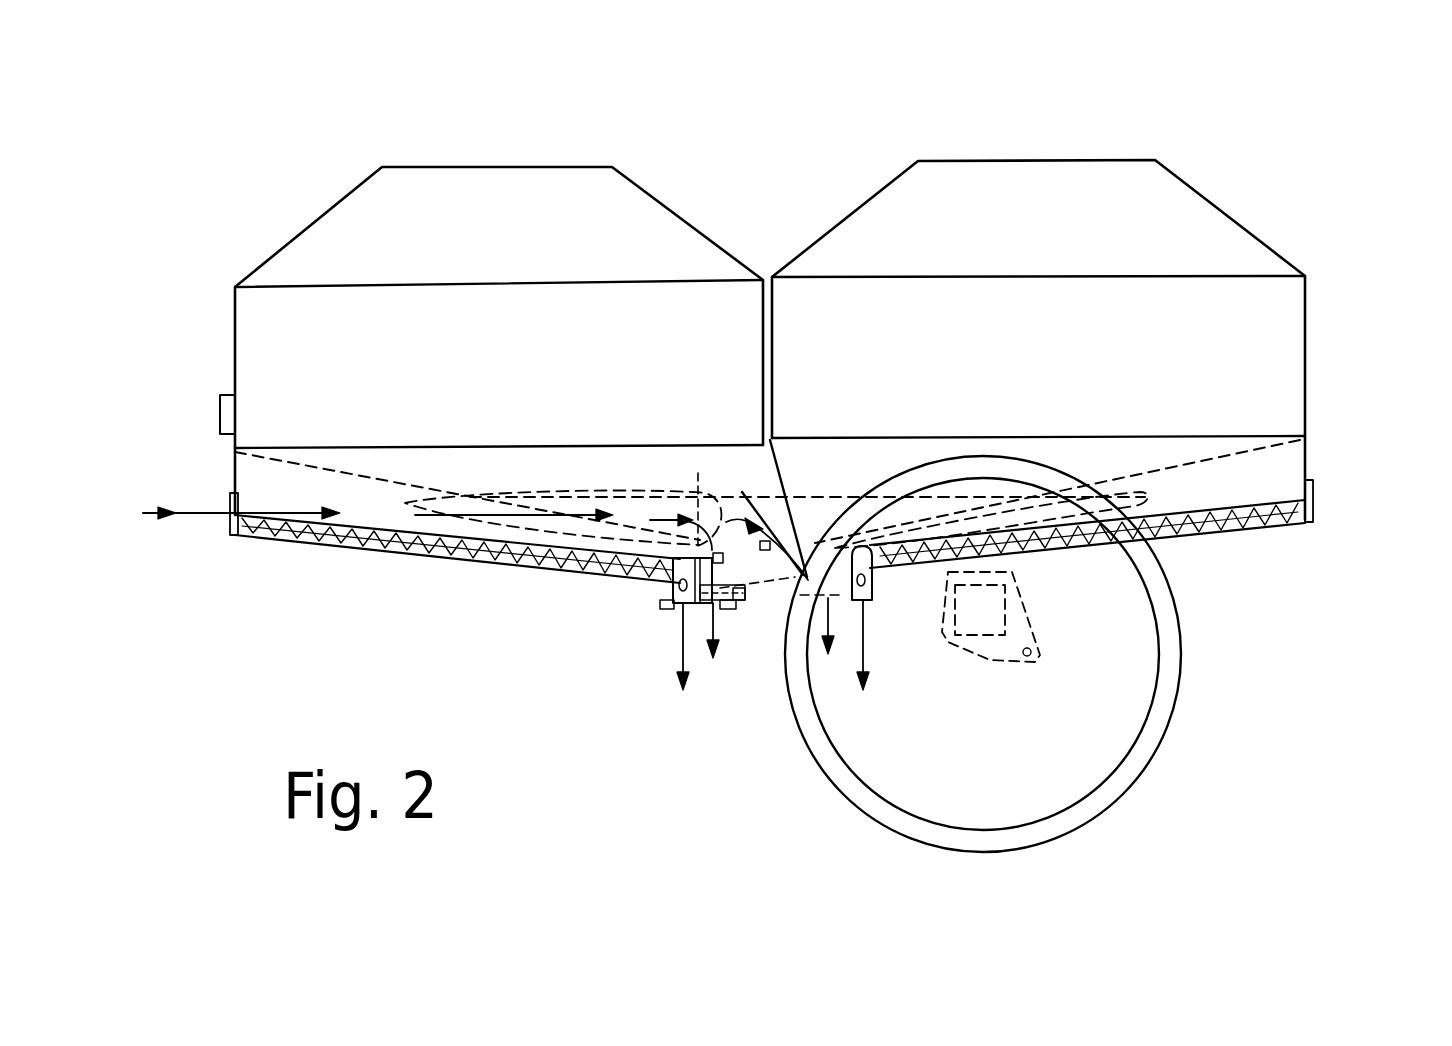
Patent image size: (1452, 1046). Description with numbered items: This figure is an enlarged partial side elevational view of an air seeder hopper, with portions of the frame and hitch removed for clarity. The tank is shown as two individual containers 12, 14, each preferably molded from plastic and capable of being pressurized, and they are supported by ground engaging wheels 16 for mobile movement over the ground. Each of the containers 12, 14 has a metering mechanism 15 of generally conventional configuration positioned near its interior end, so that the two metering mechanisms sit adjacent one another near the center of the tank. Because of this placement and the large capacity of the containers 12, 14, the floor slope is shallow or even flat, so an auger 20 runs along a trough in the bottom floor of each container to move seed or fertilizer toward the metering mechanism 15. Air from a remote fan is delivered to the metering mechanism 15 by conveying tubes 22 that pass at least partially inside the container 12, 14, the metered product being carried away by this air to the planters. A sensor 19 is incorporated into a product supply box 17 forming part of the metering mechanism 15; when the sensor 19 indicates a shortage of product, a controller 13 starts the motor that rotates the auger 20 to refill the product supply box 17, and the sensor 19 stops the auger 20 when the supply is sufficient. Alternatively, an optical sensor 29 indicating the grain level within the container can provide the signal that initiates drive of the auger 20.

The container 12 is at (325, 212).
The container 14 is at (1215, 205).
The controller 13 is at (220, 400).
The conveying tubes 22 is at (232, 508).
The auger 20 is at (265, 537).
The optical sensor 29 is at (688, 552).
The product supply box 17 is at (703, 552).
The metering mechanism 15 is at (662, 595).
The sensor 19 is at (682, 558).
The ground engaging wheels 16 is at (1155, 757).